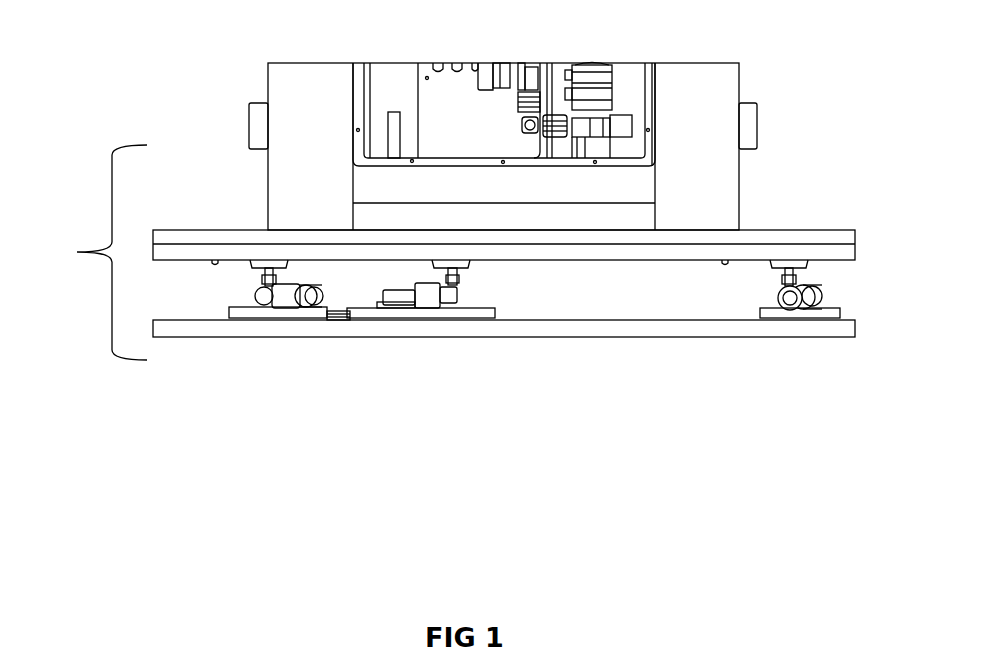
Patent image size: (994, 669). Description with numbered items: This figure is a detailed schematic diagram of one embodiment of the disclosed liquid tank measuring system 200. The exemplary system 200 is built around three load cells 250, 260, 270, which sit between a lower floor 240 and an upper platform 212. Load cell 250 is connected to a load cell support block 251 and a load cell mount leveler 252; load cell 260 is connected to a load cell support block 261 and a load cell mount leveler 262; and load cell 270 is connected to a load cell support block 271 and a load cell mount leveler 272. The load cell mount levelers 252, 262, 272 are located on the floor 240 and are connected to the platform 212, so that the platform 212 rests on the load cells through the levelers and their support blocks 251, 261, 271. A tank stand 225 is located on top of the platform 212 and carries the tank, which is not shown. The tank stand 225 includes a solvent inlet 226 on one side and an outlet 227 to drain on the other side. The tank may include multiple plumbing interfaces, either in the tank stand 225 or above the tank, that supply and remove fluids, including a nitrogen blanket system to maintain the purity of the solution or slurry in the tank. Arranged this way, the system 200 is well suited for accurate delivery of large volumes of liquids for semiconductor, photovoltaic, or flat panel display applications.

The liquid tank measuring system 200 is at (87, 252).
The platform 212 is at (183, 229).
The tank stand 225 is at (264, 75).
The solvent inlet 226 is at (248, 125).
The outlet 227 is at (762, 124).
The floor 240 is at (635, 339).
The load cell 250 is at (288, 309).
The load cell support block 251 is at (243, 322).
The load cell mount leveler 252 is at (260, 281).
The load cell 260 is at (423, 310).
The load cell support block 261 is at (480, 322).
The load cell mount leveler 262 is at (462, 280).
The load cell 270 is at (790, 310).
The load cell support block 271 is at (832, 322).
The load cell mount leveler 272 is at (780, 281).